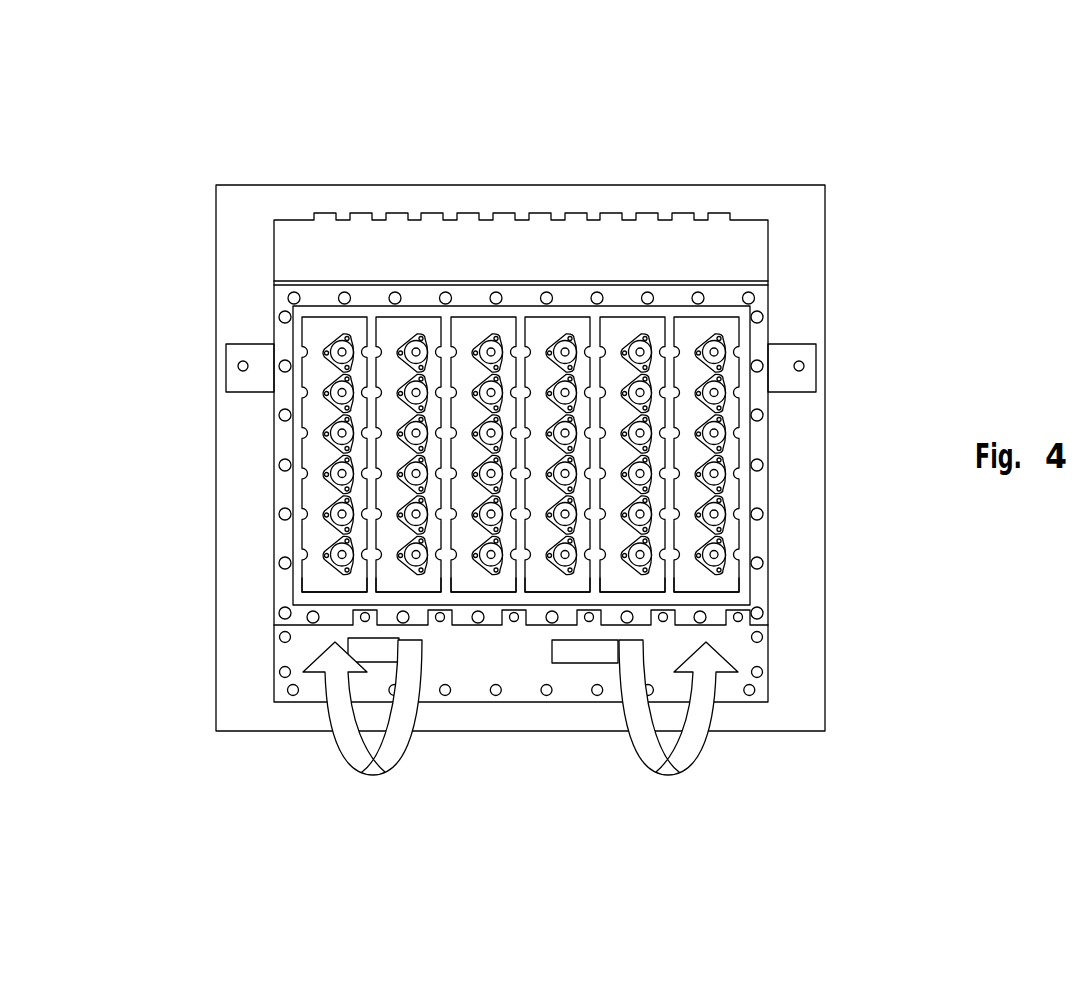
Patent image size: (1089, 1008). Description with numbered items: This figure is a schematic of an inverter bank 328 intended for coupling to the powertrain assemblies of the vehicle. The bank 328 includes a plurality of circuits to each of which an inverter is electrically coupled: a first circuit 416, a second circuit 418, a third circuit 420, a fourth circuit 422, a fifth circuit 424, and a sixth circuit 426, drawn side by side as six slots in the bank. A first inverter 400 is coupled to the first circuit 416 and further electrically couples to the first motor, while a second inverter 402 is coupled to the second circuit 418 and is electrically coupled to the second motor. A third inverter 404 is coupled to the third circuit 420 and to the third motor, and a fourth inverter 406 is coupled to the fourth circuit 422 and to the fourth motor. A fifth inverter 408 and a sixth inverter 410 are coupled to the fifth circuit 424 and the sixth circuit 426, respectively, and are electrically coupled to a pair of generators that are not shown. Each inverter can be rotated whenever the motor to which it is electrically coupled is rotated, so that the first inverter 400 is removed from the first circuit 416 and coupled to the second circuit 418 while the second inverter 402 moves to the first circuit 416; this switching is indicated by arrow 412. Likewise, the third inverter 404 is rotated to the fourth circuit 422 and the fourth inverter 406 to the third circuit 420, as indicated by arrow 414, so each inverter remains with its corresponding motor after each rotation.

The inverter bank 328 is at (245, 148).
The first inverter 400 is at (315, 578).
The second inverter 402 is at (420, 583).
The third inverter 404 is at (640, 580).
The fourth inverter 406 is at (726, 578).
The fifth inverter 408 is at (463, 580).
The sixth inverter 410 is at (544, 584).
The arrow 412 is at (377, 775).
The arrow 414 is at (663, 775).
The first circuit 416 is at (321, 316).
The second circuit 418 is at (412, 312).
The third circuit 420 is at (633, 314).
The fourth circuit 422 is at (725, 314).
The fifth circuit 424 is at (483, 314).
The sixth circuit 426 is at (562, 314).